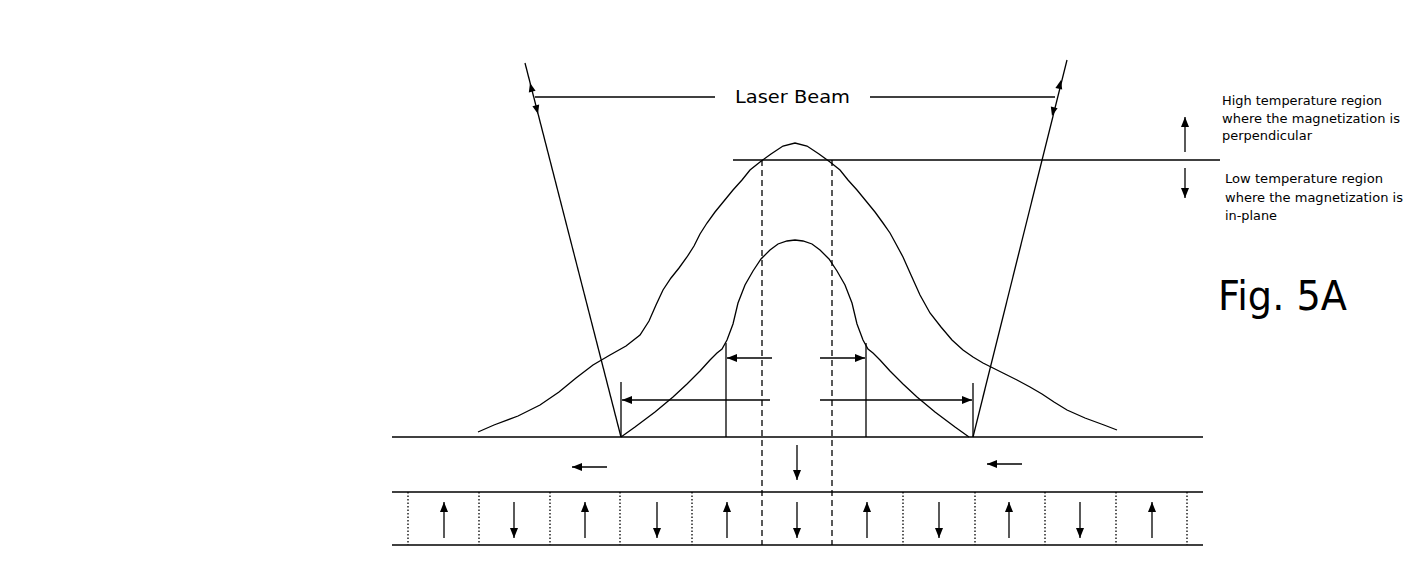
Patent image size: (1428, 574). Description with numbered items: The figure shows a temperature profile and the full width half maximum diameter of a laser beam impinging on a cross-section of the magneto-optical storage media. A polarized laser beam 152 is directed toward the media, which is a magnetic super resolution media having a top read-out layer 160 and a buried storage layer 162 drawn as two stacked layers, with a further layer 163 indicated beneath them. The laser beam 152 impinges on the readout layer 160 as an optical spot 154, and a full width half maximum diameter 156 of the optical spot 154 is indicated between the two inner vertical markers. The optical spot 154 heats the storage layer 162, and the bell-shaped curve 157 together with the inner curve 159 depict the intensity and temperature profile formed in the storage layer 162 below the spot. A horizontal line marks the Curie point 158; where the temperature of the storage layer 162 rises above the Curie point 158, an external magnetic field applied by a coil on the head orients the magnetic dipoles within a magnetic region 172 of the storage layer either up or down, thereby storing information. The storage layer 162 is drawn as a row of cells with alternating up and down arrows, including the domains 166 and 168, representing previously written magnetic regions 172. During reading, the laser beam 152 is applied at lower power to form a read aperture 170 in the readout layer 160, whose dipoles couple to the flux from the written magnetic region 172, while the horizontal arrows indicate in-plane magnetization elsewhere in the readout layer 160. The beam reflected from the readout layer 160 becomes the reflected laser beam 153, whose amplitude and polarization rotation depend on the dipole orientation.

The polarized laser beam 152 is at (536, 115).
The reflected laser beam 153 is at (528, 85).
The optical spot 154 is at (797, 409).
The full width half maximum diameter 156 is at (796, 390).
The laser beam intensity profile 157 is at (1030, 387).
The Curie point 158 is at (812, 163).
The temperature profile 159 is at (848, 288).
The read-out layer 160 is at (1180, 468).
The storage layer 162 is at (1208, 522).
The substrate 163 is at (413, 563).
The up magnetic domain 166 is at (440, 517).
The down magnetic domain 168 is at (512, 517).
The read aperture 170 is at (760, 460).
The magnetic region 172 is at (812, 512).